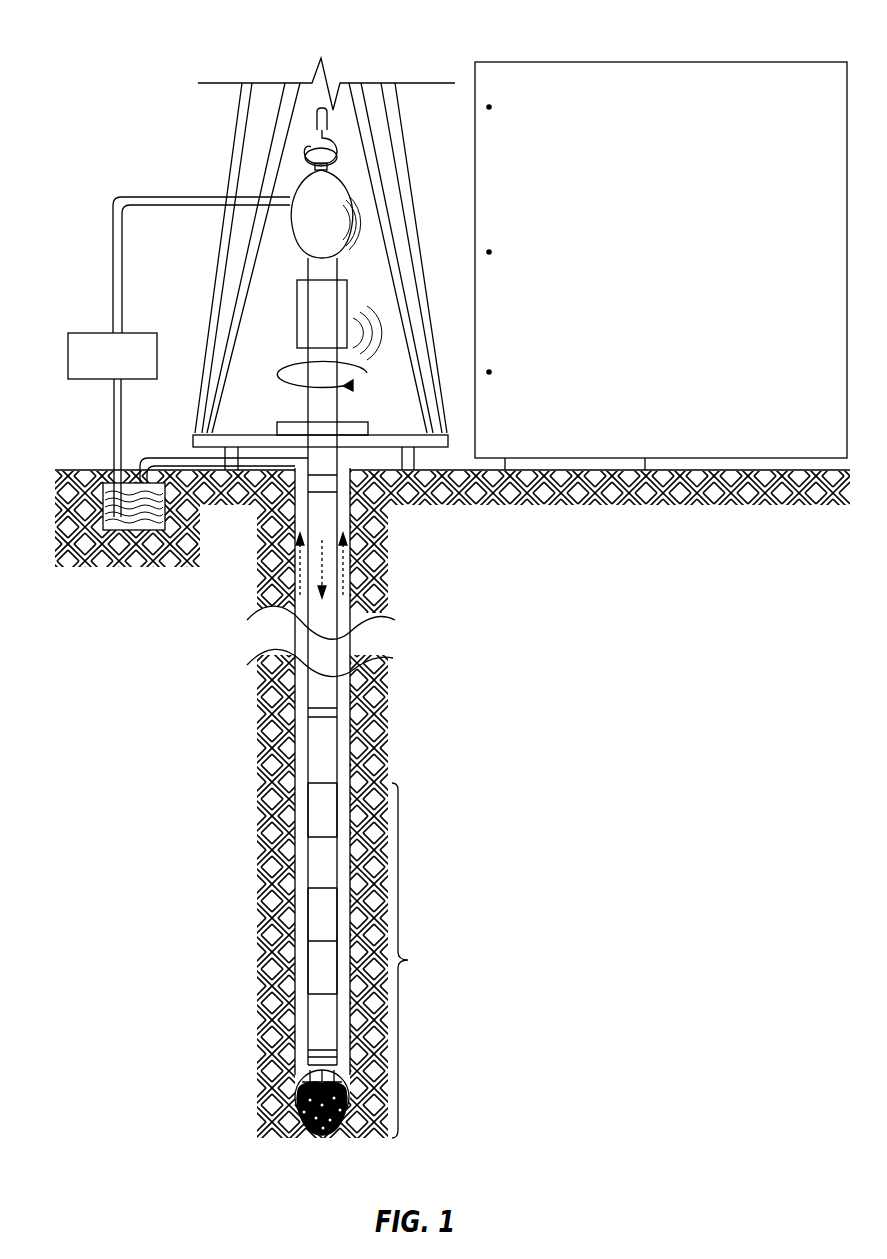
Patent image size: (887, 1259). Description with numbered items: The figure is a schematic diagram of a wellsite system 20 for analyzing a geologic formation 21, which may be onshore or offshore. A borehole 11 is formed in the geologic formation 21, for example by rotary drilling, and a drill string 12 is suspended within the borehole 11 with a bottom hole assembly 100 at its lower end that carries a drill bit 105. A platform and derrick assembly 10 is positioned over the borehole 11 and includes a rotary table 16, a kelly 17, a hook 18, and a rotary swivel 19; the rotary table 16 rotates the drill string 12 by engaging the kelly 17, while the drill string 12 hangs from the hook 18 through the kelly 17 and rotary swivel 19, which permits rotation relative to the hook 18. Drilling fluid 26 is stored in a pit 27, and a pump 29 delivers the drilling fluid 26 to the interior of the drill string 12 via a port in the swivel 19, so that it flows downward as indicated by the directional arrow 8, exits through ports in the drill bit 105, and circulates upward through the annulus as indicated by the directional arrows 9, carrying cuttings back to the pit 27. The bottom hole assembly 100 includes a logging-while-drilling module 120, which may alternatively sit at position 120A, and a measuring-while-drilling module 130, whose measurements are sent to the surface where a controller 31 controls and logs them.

The wellsite system 20 is at (86, 66).
The platform and derrick assembly 10 is at (418, 128).
The hook 18 is at (318, 108).
The rotary swivel 19 is at (296, 237).
The kelly 17 is at (320, 405).
The borehole 11 is at (356, 435).
The drill string 12 is at (320, 460).
The rotary table 16 is at (345, 475).
The controller 31 is at (784, 62).
The pump 29 is at (101, 383).
The pit 27 is at (108, 474).
The drilling fluid 26 is at (132, 513).
The directional arrows 9 is at (297, 567).
The directional arrow 8 is at (322, 568).
The geologic formation 21 is at (268, 740).
The bottom hole assembly 100 is at (419, 960).
The logging-while-drilling module 120 is at (315, 862).
The measuring-while-drilling module 130 is at (307, 918).
The alternative module position 120A is at (315, 968).
The drill bit 105 is at (302, 1092).